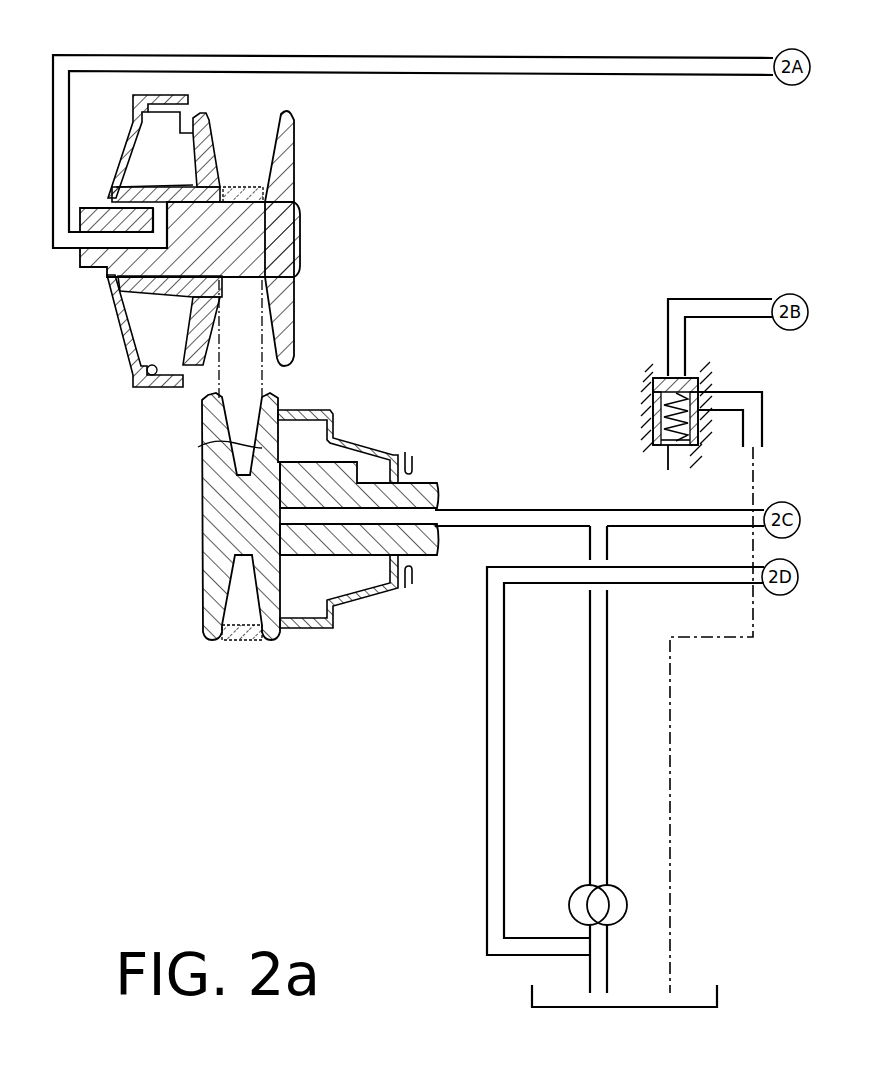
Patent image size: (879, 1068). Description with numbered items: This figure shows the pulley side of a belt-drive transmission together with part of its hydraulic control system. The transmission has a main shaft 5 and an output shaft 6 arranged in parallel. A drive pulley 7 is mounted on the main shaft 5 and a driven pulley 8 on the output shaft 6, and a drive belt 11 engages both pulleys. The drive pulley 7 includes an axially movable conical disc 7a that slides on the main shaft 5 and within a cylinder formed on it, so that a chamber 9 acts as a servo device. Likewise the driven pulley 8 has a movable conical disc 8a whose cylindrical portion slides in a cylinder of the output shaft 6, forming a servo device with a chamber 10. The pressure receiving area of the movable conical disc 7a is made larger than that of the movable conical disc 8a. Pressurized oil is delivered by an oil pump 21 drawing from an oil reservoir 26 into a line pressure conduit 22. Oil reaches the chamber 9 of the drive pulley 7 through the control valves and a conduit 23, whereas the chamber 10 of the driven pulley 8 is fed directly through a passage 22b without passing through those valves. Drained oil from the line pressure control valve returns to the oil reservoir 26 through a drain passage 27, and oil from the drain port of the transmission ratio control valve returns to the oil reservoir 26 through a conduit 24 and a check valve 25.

The main shaft 5 is at (102, 260).
The output shaft 6 is at (428, 488).
The drive pulley 7 is at (305, 143).
The movable conical disc 7a is at (207, 132).
The driven pulley 8 is at (200, 555).
The movable conical disc 8a is at (198, 447).
The chamber 9 is at (168, 161).
The chamber 10 is at (373, 568).
The drive belt 11 is at (247, 641).
The oil pump 21 is at (618, 896).
The line pressure conduit 22 is at (722, 509).
The passage 22b is at (567, 508).
The conduit 23 is at (605, 57).
The conduit 24 is at (723, 298).
The check valve 25 is at (653, 419).
The oil reservoir 26 is at (716, 994).
The drain passage 27 is at (641, 586).